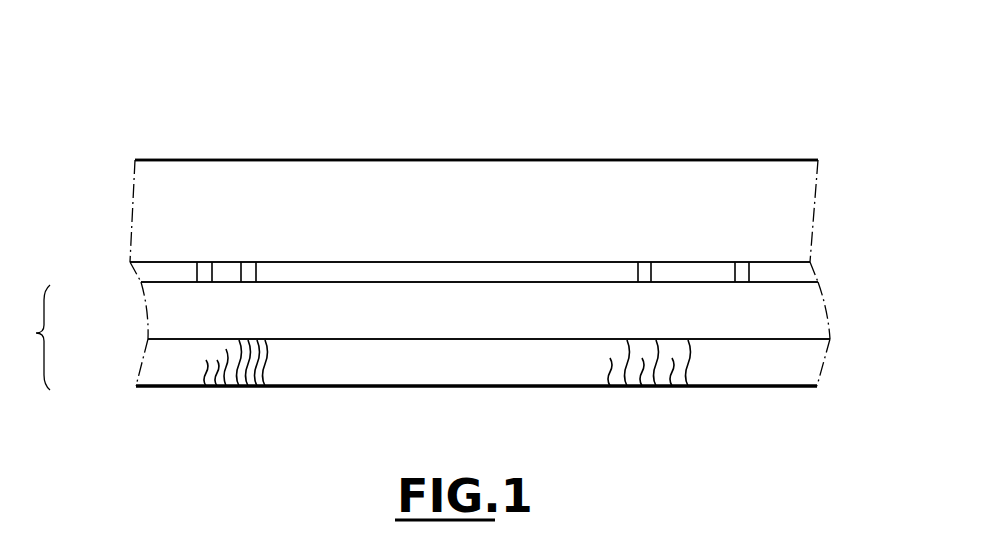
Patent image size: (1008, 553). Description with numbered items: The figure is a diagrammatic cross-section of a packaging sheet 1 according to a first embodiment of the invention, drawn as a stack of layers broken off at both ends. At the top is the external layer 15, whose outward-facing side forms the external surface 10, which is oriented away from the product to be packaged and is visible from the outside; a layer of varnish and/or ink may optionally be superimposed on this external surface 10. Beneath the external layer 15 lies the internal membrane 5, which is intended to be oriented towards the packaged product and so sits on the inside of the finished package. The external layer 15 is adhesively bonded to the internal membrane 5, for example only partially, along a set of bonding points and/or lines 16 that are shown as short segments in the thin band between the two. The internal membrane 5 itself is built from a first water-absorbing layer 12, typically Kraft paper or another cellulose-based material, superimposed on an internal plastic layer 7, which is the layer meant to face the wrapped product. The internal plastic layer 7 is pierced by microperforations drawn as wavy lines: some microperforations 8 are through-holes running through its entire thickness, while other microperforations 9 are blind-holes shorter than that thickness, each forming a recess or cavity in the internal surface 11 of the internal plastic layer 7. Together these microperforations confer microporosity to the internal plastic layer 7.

The packaging sheet 1 is at (724, 121).
The internal membrane 5 is at (34, 337).
The internal plastic layer 7 is at (150, 362).
The microperforations 8 is at (268, 391).
The microperforations 9 is at (233, 391).
The external surface 10 is at (206, 160).
The internal surface 11 is at (160, 388).
The first water-absorbing layer 12 is at (150, 310).
The external layer 15 is at (152, 212).
The bonding points and/or lines 16 is at (197, 275).